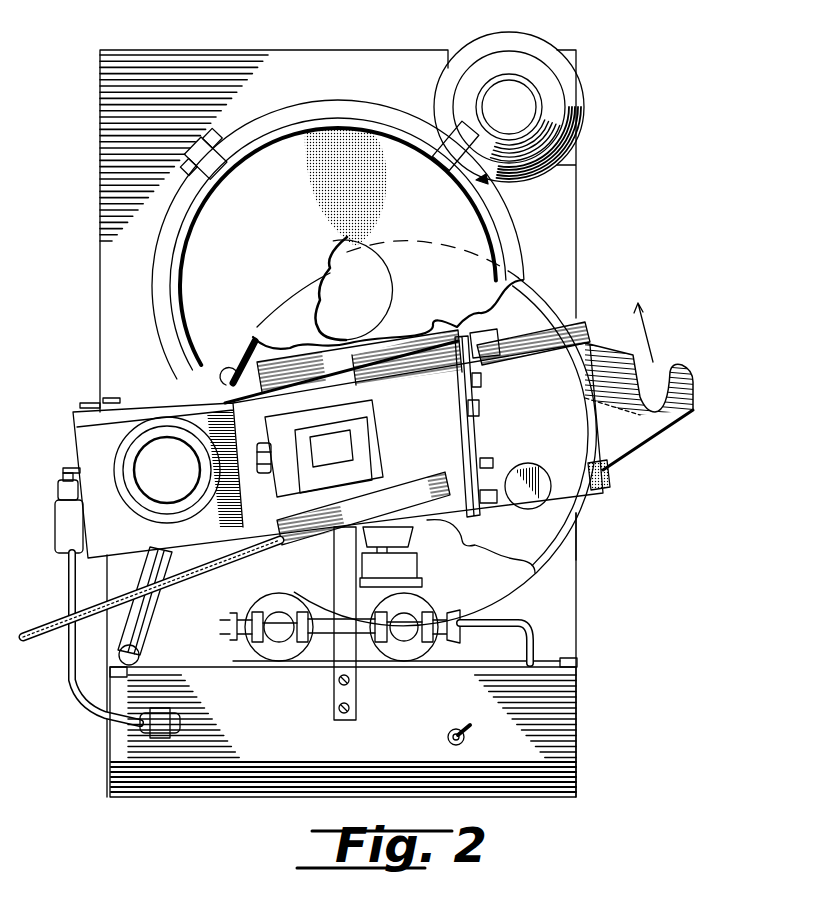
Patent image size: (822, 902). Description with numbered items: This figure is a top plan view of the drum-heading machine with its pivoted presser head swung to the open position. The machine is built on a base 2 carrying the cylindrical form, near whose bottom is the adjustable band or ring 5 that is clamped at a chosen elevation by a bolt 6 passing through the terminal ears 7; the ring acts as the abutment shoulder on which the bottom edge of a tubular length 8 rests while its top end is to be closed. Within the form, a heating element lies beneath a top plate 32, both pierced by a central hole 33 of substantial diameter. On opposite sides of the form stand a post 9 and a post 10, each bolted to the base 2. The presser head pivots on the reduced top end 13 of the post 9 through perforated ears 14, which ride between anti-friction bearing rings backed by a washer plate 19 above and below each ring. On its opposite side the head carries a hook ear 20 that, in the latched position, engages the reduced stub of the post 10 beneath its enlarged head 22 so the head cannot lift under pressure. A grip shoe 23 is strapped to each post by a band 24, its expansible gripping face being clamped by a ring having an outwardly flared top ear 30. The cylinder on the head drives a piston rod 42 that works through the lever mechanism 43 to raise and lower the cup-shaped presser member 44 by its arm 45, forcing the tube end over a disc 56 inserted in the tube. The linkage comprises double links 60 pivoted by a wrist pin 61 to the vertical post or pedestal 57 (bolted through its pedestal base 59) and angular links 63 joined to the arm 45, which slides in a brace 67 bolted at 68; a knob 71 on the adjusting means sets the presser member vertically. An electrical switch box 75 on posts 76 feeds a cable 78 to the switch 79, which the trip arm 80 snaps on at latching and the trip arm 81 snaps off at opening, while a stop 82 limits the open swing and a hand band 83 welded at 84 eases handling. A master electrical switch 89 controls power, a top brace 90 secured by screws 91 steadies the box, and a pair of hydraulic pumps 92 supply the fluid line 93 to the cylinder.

The base 2 is at (272, 70).
The band or ring 5 is at (343, 102).
The bolt 6 is at (175, 175).
The terminal ears 7 is at (216, 150).
The tubular length 8 is at (155, 264).
The post 9 is at (118, 447).
The post 10 is at (584, 93).
The top end of post 13 is at (165, 430).
The ears 14 is at (190, 387).
The washer plate 19 is at (130, 508).
The hook ear 20 is at (627, 433).
The enlarged head 22 is at (545, 85).
The grip shoe 23 is at (513, 191).
The band 24 is at (583, 134).
The outwardly flared top ear 30 is at (462, 152).
The top plate 32 is at (505, 235).
The central hole 33 is at (375, 263).
The piston rod 42 is at (264, 478).
The lever mechanism 43 is at (400, 336).
The presser member 44 is at (522, 295).
The arm 45 is at (479, 420).
The disc 56 is at (283, 156).
The vertical post or pedestal 57 is at (368, 350).
The pedestal base 59 is at (490, 357).
The double links 60 is at (305, 398).
The wrist pin 61 is at (485, 439).
The angular links 63 is at (318, 430).
The brace 67 is at (483, 395).
The bolt connection 68 is at (520, 300).
The knob 71 is at (535, 470).
The electrical switch box 75 is at (582, 718).
The posts 76 is at (115, 700).
The electric cable 78 is at (66, 677).
The switch 79 is at (55, 535).
The trip arm 80 is at (92, 402).
The trip arm 81 is at (67, 468).
The stop 82 is at (145, 623).
The hand band 83 is at (578, 513).
The weld point 84 is at (613, 480).
The master electrical switch 89 is at (455, 727).
The top brace 90 is at (333, 667).
The screws 91 is at (338, 712).
The hydraulic pumps 92 is at (255, 613).
The fluid line 93 is at (528, 623).